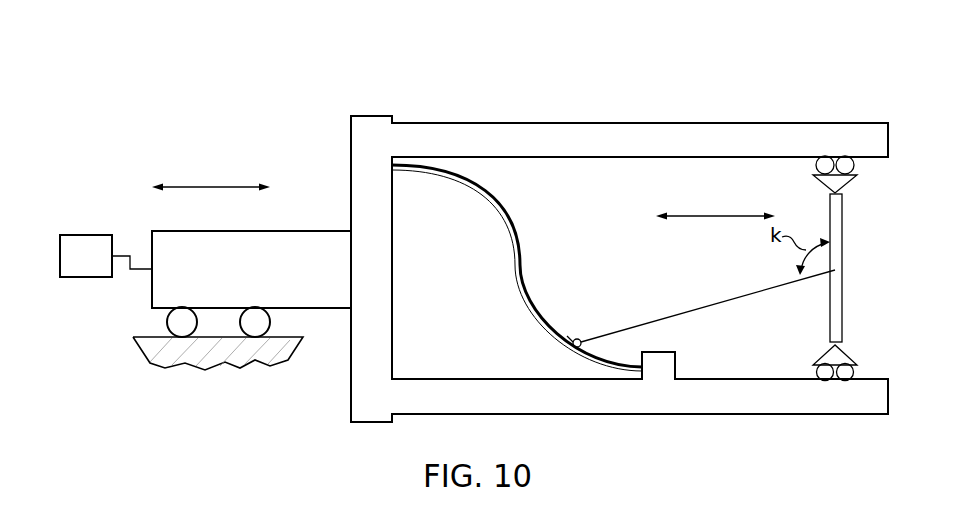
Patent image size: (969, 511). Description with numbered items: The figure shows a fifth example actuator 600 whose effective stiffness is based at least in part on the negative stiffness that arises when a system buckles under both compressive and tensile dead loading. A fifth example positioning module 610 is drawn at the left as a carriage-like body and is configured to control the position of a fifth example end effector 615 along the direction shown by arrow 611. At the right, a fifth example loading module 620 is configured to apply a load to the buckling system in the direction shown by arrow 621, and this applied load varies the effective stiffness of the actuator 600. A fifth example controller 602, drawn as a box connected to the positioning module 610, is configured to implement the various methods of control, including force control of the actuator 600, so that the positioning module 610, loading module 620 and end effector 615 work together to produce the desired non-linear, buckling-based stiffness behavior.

The fifth example actuator 600 is at (510, 223).
The fifth example controller 602 is at (109, 268).
The fifth example positioning module 610 is at (270, 280).
The arrow 611 is at (212, 186).
The fifth example end effector 615 is at (842, 250).
The fifth example loading module 620 is at (855, 268).
The arrow 621 is at (712, 218).